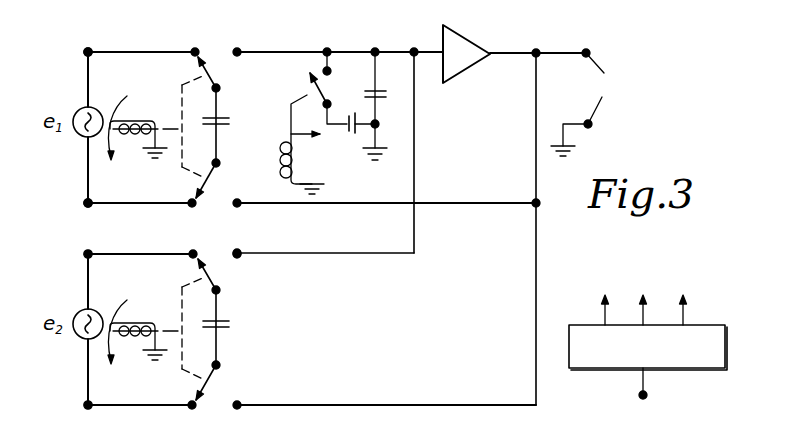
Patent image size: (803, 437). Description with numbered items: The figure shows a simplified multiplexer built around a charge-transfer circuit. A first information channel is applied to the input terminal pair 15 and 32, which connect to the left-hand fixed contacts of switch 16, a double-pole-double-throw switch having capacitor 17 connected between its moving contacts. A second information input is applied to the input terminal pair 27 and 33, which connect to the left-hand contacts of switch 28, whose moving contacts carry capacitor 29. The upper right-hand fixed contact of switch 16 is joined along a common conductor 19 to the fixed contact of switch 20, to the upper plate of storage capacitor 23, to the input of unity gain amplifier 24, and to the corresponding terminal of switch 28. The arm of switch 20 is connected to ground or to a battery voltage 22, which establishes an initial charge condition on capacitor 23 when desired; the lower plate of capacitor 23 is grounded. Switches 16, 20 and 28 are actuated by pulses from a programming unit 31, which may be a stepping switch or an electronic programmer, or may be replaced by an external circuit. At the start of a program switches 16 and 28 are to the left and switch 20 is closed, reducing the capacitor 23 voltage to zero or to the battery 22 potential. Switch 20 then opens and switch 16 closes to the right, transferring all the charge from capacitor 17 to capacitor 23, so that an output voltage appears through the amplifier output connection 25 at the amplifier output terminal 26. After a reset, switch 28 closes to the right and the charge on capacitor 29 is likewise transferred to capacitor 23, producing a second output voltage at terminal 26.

The input terminal 15 is at (85, 52).
The switch 16 is at (181, 92).
The capacitor 17 is at (221, 116).
The common bus conductor 19 is at (298, 52).
The switch 20 is at (307, 95).
The battery voltage 22 is at (352, 135).
The storage capacitor 23 is at (382, 91).
The unity gain amplifier 24 is at (463, 40).
The output terminal 25 is at (513, 52).
The amplifier output terminal 26 is at (589, 104).
The input terminal 27 is at (85, 253).
The switch 28 is at (181, 298).
The capacitor 29 is at (220, 320).
The programming unit 31 is at (706, 323).
The input terminal 32 is at (85, 203).
The input terminal 33 is at (85, 406).